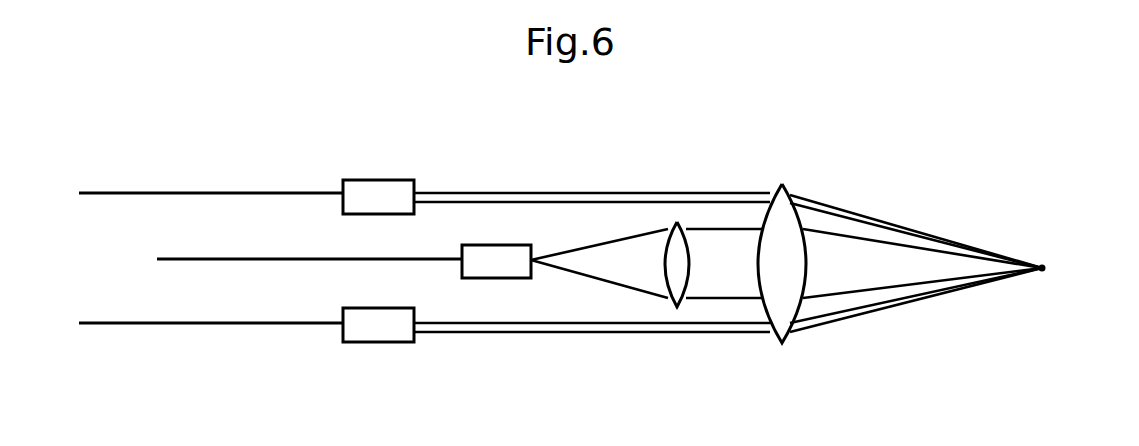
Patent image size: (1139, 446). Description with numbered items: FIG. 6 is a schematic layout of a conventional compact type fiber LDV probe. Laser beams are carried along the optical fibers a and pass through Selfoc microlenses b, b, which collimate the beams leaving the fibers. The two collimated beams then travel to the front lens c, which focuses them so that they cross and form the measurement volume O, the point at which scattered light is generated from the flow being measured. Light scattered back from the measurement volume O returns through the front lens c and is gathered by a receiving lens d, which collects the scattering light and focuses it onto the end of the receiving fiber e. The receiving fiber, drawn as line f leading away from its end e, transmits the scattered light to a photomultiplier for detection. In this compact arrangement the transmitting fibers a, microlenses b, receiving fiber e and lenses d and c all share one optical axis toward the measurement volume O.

The laser beams a is at (157, 192).
The Selfoc microlens b is at (381, 180).
The front lens c is at (787, 196).
The collimating lens d is at (665, 292).
The receiving fiber e is at (505, 279).
The beam f is at (205, 260).
The measurement volume O is at (1045, 268).